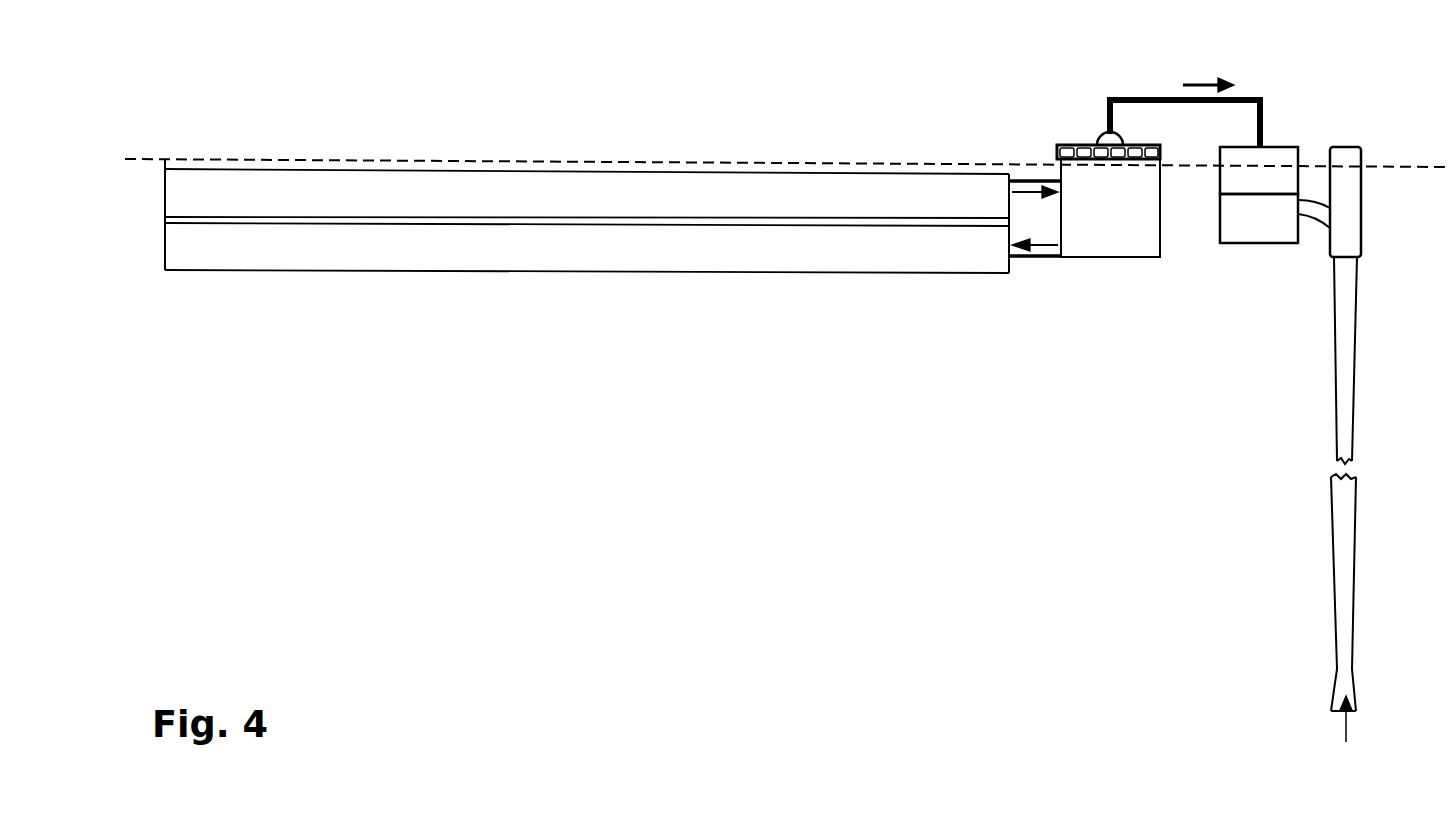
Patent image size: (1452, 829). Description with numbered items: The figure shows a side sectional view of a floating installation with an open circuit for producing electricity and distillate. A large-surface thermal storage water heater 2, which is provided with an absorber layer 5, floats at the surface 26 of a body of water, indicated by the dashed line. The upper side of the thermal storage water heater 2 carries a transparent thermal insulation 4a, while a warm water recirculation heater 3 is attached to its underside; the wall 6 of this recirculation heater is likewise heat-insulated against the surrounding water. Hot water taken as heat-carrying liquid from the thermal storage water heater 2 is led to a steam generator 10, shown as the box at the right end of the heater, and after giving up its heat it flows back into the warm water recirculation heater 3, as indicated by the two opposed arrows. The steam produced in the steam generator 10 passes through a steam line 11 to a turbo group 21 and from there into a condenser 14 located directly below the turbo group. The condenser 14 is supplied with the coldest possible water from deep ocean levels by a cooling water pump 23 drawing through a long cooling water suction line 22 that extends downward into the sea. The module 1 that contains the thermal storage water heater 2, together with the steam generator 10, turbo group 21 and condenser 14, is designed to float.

The module 1 is at (587, 246).
The thermal storage water heater 2 is at (597, 197).
The warm water recirculation heater 3 is at (462, 265).
The transparent thermal insulation 4a is at (710, 173).
The absorber layer 5 is at (855, 220).
The wall 6 is at (727, 273).
The steam generator 10 is at (1125, 250).
The steam line 11 is at (1175, 96).
The condenser 14 is at (1262, 232).
The turbo group 21 is at (1267, 170).
The cooling water suction line 22 is at (1346, 376).
The cooling water pump 23 is at (1362, 193).
The surface 26 is at (142, 159).